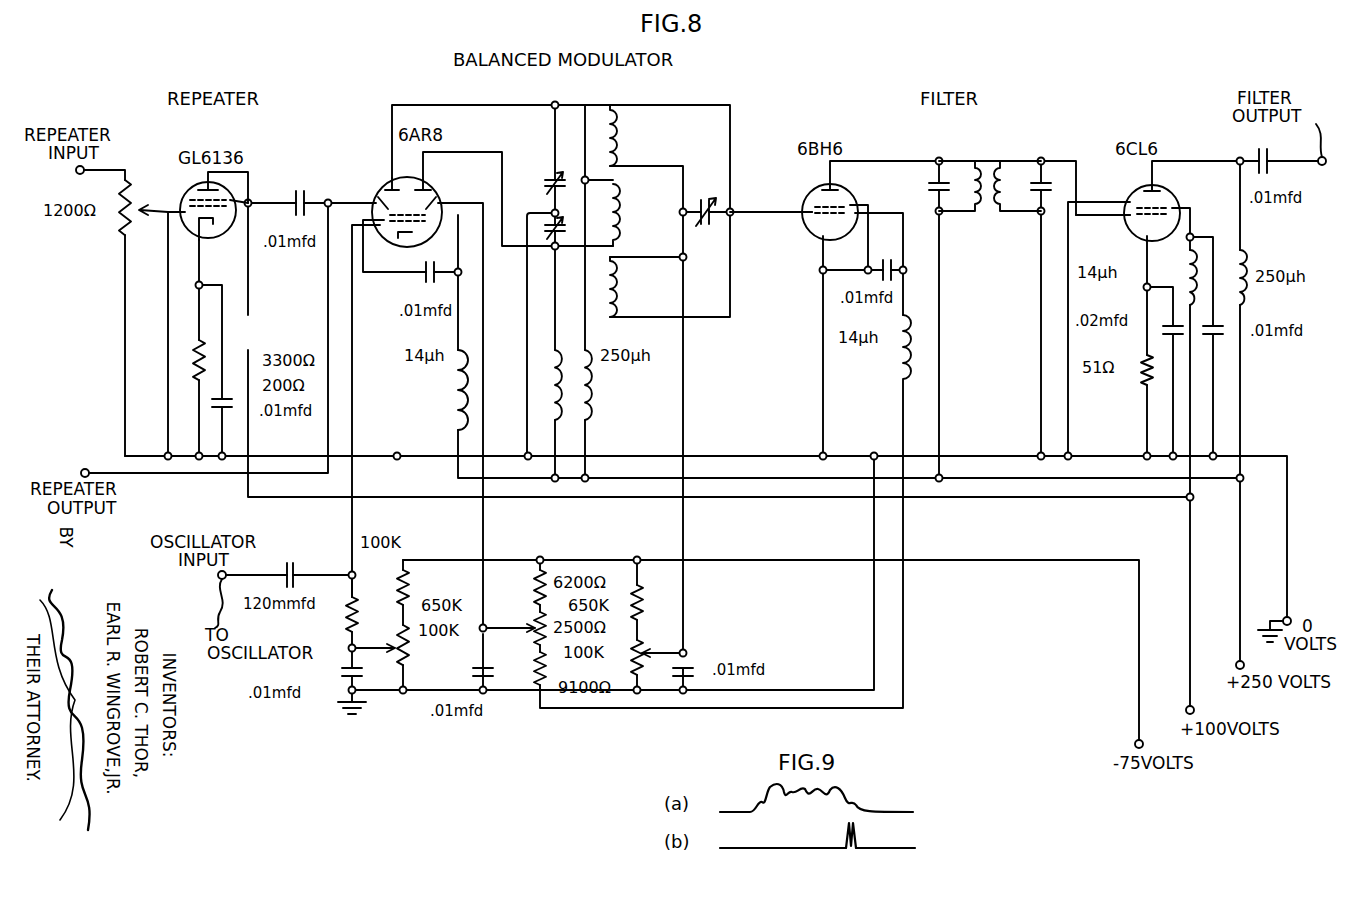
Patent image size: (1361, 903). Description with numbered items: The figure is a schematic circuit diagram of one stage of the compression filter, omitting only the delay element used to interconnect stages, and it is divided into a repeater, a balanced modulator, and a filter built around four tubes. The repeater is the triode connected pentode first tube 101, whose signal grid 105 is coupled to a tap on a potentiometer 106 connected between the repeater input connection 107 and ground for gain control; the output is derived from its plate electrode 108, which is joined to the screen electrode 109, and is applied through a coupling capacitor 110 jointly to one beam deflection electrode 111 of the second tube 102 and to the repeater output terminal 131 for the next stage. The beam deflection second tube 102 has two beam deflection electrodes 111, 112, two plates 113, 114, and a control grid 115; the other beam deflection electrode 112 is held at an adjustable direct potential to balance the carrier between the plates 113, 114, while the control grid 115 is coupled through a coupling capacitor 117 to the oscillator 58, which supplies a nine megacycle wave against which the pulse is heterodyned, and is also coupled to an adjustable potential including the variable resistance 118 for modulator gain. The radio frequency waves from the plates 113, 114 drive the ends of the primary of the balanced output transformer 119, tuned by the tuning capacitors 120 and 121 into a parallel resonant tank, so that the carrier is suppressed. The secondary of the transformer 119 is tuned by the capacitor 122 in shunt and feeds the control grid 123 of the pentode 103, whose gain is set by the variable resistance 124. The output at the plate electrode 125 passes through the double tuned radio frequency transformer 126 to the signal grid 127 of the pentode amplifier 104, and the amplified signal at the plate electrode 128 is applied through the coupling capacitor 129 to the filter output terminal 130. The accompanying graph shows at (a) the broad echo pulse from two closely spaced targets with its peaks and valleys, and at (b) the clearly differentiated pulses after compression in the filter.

The first tube 101 is at (182, 200).
The second tube 102 is at (380, 200).
The pentode 103 is at (855, 203).
The pentode amplifier 104 is at (1170, 205).
The signal grid 105 is at (210, 228).
The potentiometer 106 is at (118, 233).
The repeater input connection 107 is at (80, 175).
The plate electrode 108 is at (196, 190).
The screen electrode 109 is at (235, 199).
The coupling capacitor 110 is at (300, 184).
The beam deflection electrode 111 is at (376, 203).
The beam deflection electrode 112 is at (432, 205).
The plate 113 is at (390, 180).
The plate 114 is at (428, 190).
The control grid 115 is at (420, 235).
The coupling capacitor 117 is at (290, 565).
The variable resistance 118 is at (408, 655).
The balanced output transformer 119 is at (625, 98).
The tuning capacitor 120 is at (548, 183).
The tuning capacitor 121 is at (548, 222).
The capacitor 122 is at (705, 199).
The control grid 123 is at (815, 205).
The variable resistance 124 is at (632, 665).
The plate electrode 125 is at (835, 195).
The double tuned radio frequency transformer 126 is at (1008, 152).
The signal grid 127 is at (1130, 228).
The plate electrode 128 is at (1156, 190).
The coupling capacitor 129 is at (1258, 160).
The filter output terminal 130 is at (1320, 166).
The repeater output terminal 131 is at (86, 468).
The oscillator 58 is at (226, 626).